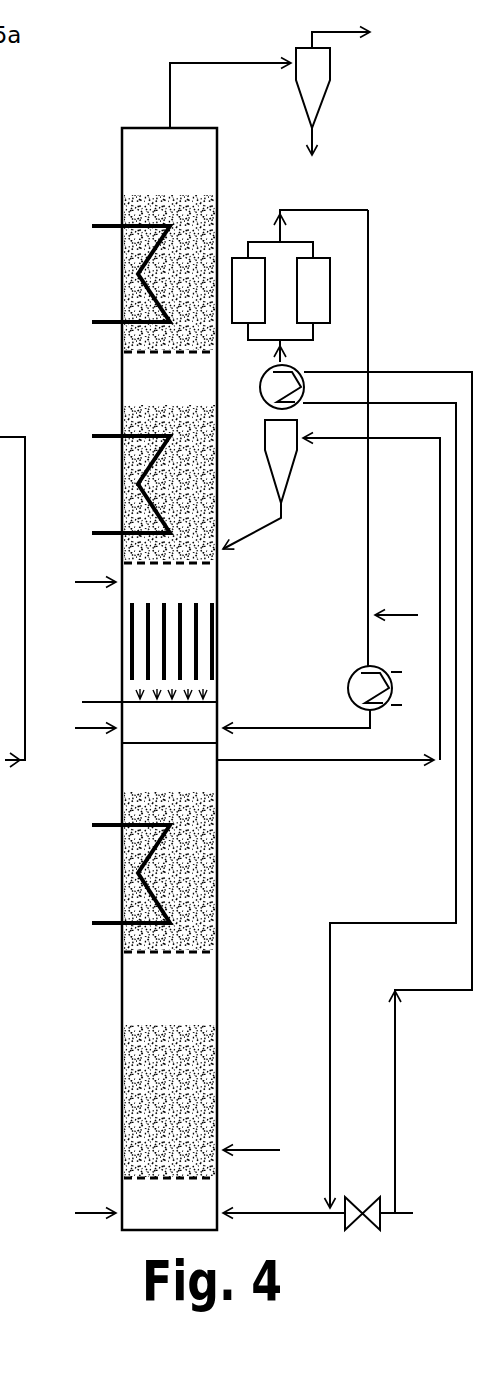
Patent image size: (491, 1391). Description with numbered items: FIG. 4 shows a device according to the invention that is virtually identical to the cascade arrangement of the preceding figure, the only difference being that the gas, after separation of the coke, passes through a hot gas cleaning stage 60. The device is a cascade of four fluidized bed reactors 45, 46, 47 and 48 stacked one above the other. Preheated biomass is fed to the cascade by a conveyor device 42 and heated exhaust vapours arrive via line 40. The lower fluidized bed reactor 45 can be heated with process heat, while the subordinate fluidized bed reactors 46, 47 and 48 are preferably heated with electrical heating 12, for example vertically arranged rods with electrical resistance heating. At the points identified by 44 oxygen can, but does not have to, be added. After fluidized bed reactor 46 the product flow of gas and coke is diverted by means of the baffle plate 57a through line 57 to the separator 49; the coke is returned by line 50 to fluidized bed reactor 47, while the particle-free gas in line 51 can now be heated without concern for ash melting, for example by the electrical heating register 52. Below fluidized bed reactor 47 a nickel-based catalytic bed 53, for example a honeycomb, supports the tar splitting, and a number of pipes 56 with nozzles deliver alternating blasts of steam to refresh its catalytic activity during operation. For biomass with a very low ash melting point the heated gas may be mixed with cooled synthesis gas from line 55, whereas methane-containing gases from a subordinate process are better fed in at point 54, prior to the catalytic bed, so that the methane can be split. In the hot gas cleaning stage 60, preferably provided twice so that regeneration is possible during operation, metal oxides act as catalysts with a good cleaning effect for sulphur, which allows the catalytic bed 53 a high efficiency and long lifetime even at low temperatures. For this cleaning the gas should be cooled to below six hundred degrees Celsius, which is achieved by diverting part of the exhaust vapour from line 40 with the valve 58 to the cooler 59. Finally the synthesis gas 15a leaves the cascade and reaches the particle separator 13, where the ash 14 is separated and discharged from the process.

The electrical heating 12 is at (124, 574).
The particle separator 13 is at (312, 95).
The ash 14 is at (293, 146).
The synthesis gas 15a is at (372, 35).
The line 40 is at (417, 1214).
The conveyor device 42 is at (258, 1133).
The points 44 is at (94, 990).
The lower fluidized bed reactor 45 is at (92, 1098).
The fluidized bed reactor 46 is at (248, 877).
The fluidized bed reactor 47 is at (100, 398).
The fluidized bed reactor 48 is at (103, 187).
The separator 49 is at (283, 472).
The line 50 is at (260, 530).
The line 51 is at (372, 347).
The electrical heating register 52 is at (312, 697).
The catalytic bed 53 is at (203, 640).
The point 54 is at (398, 599).
The line 55 is at (95, 599).
The pipes with nozzles 56 is at (149, 686).
The withdrawal line 57 is at (353, 762).
The baffle plate 57a is at (170, 745).
The valve 58 is at (301, 1233).
The cooler 59 is at (266, 387).
The hot gas cleaning stage 60 is at (252, 305).